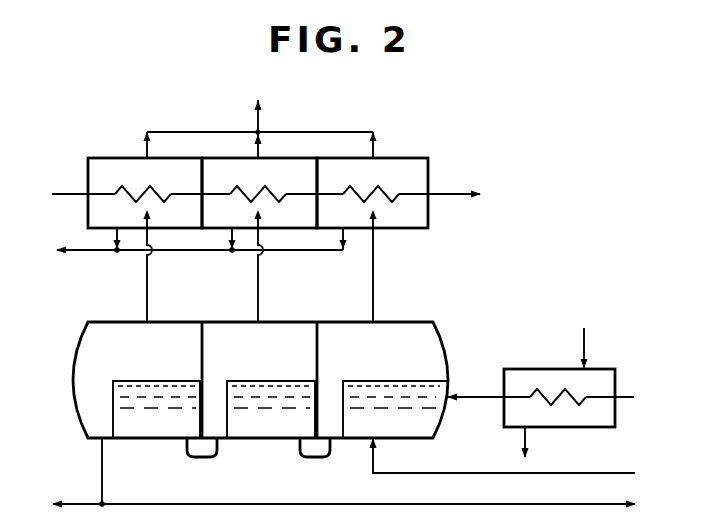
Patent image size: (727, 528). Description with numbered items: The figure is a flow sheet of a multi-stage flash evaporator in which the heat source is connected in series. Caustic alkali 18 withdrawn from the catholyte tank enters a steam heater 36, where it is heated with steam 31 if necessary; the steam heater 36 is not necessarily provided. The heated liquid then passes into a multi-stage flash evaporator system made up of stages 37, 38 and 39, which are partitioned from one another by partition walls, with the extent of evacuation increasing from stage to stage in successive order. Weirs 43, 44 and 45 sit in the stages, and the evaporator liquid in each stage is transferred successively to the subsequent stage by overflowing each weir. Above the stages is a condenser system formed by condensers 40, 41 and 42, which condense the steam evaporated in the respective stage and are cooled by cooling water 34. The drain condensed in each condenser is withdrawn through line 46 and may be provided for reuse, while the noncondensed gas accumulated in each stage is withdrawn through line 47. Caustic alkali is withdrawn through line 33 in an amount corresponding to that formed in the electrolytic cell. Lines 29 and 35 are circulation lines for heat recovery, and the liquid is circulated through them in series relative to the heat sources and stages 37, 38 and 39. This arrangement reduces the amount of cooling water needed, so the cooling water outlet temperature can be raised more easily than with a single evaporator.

The caustic alkali 18 is at (555, 397).
The circulation line 29 is at (383, 504).
The steam 31 is at (581, 337).
The caustic alkali withdrawal line 33 is at (62, 477).
The cooling water 34 is at (250, 194).
The circulation line 35 is at (517, 461).
The steam heater 36 is at (604, 369).
The flash evaporator stage 37 is at (382, 380).
The flash evaporator stage 38 is at (259, 380).
The flash evaporator stage 39 is at (137, 380).
The condenser 40 is at (372, 191).
The condenser 41 is at (259, 204).
The condenser 42 is at (145, 191).
The weir 43 is at (345, 416).
The weir 44 is at (229, 416).
The weir 45 is at (115, 416).
The drain line 46 is at (181, 250).
The noncondensed gas line 47 is at (260, 117).